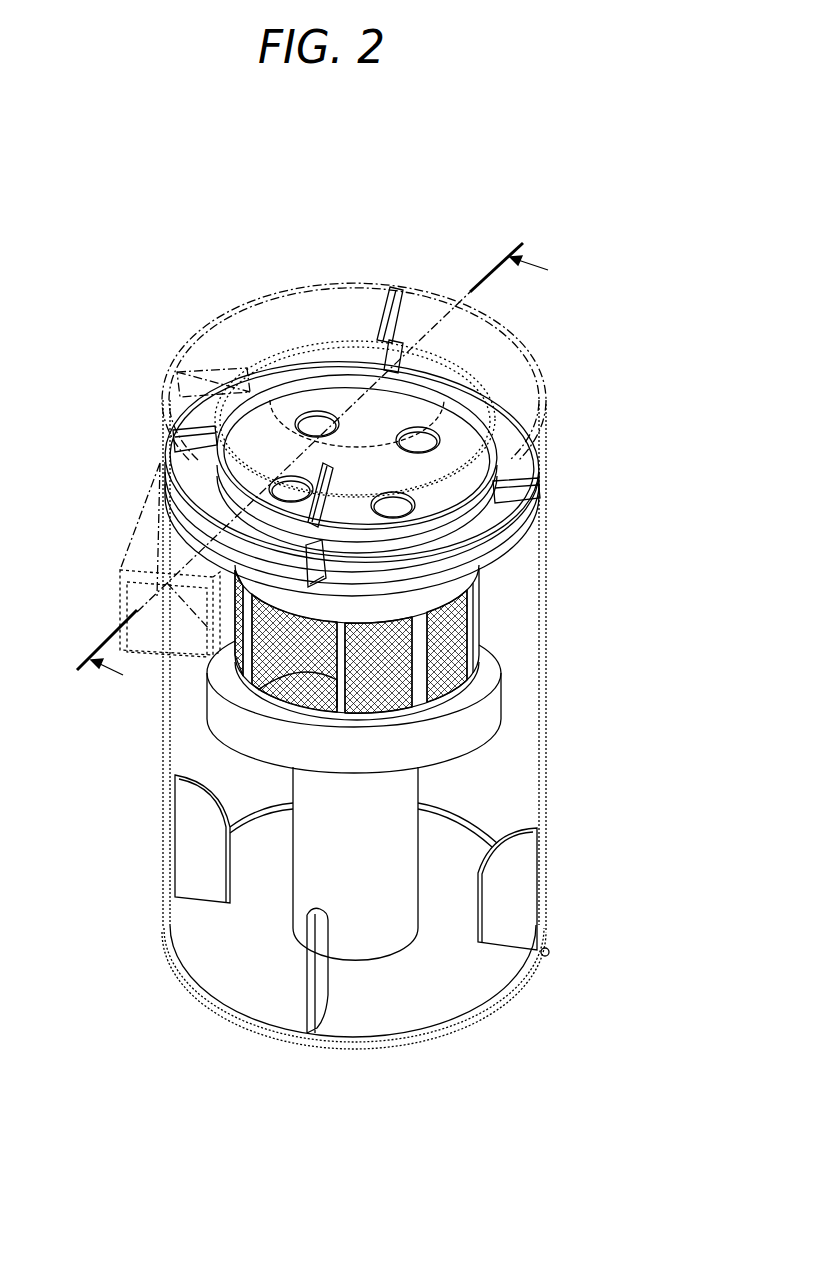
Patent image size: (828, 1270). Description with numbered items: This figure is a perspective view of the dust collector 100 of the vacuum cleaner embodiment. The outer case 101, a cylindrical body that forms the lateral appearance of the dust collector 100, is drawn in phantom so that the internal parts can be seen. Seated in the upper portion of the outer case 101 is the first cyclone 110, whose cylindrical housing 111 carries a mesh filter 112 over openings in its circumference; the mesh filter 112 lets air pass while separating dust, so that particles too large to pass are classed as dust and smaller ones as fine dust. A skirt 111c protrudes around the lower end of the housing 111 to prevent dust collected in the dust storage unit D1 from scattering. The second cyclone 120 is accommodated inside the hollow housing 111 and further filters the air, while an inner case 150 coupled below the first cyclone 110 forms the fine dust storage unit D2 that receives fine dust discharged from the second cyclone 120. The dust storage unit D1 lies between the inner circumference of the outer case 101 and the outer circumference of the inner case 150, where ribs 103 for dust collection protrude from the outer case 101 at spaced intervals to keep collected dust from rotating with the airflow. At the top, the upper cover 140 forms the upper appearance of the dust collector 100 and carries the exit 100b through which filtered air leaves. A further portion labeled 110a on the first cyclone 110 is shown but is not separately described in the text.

The dust collector 100 is at (192, 283).
The exit 100b is at (358, 390).
The outer case 101 is at (550, 780).
The ribs for dust collection 103 is at (195, 846).
The first cyclone 110 is at (652, 557).
The filter window 110a is at (161, 599).
The housing 111 is at (400, 591).
The skirt 111c is at (490, 683).
The mesh filter 112 is at (478, 627).
The second cyclone 120 is at (313, 673).
The upper cover 140 is at (434, 312).
The inner case 150 is at (293, 889).
The dust storage unit D1 is at (245, 957).
The fine dust storage unit D2 is at (358, 927).